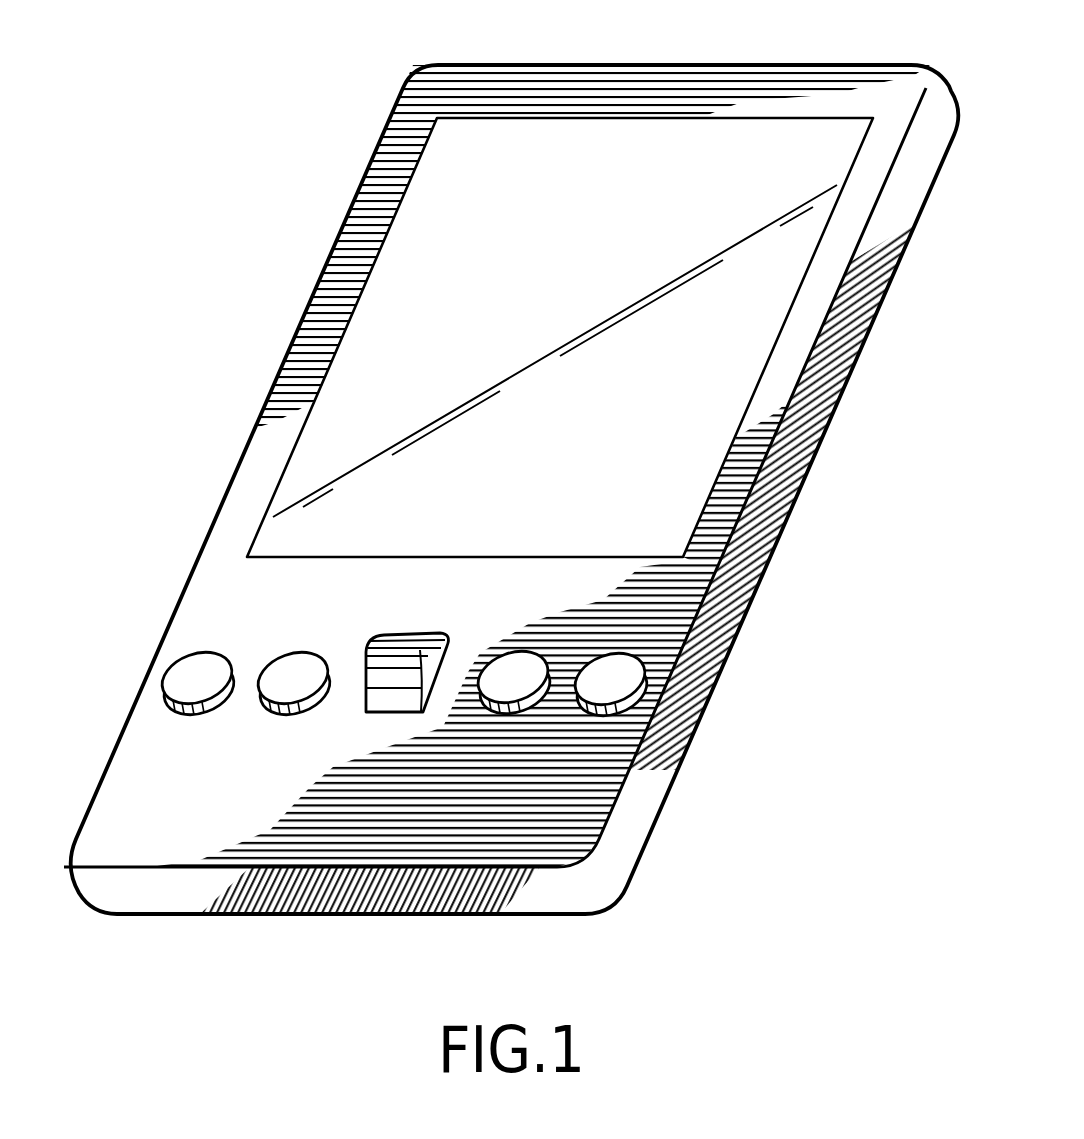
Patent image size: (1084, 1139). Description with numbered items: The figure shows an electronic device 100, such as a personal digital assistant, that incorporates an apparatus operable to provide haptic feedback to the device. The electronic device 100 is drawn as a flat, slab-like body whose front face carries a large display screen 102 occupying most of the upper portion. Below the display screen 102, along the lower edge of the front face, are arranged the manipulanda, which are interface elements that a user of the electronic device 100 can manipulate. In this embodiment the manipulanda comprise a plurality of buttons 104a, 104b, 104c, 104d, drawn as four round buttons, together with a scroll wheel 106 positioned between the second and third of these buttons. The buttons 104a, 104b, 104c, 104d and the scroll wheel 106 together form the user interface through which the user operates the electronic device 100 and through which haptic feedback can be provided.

The electronic device 100 is at (336, 243).
The display screen 102 is at (307, 453).
The button 104a is at (187, 667).
The button 104b is at (287, 663).
The button 104c is at (507, 670).
The button 104d is at (613, 675).
The scroll wheel 106 is at (402, 632).